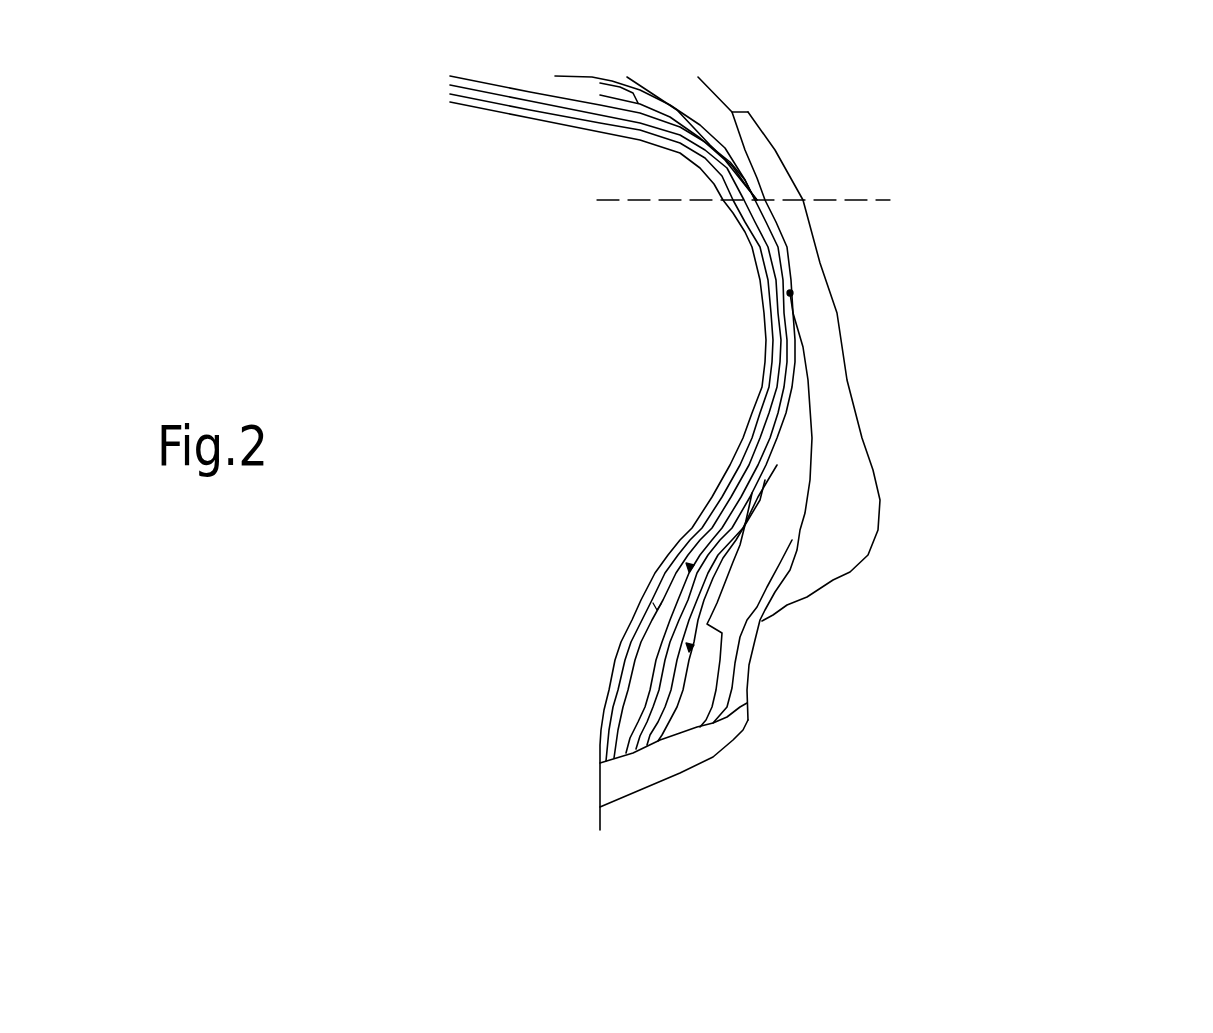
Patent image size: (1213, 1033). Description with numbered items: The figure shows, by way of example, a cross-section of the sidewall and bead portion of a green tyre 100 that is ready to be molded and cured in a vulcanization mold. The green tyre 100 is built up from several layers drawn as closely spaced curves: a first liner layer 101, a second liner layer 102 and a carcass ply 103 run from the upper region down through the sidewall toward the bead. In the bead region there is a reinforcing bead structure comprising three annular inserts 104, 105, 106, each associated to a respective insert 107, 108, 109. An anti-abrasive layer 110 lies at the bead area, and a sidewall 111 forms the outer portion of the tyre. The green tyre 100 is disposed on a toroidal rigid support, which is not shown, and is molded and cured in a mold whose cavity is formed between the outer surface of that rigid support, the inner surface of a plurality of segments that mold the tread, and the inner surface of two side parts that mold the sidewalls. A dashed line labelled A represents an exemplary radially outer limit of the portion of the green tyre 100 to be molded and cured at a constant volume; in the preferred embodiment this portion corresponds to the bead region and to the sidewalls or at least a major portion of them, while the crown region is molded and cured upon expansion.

The green tyre 100 is at (1062, 259).
The first liner layer 101 is at (765, 362).
The second liner layer 102 is at (775, 277).
The carcass ply 103 is at (787, 307).
The annular insert 104 is at (632, 697).
The annular insert 105 is at (657, 707).
The annular insert 106 is at (693, 690).
The insert 107 is at (672, 598).
The insert 108 is at (703, 580).
The insert 109 is at (775, 518).
The anti-abrasive layer 110 is at (640, 775).
The sidewall 111 is at (845, 473).